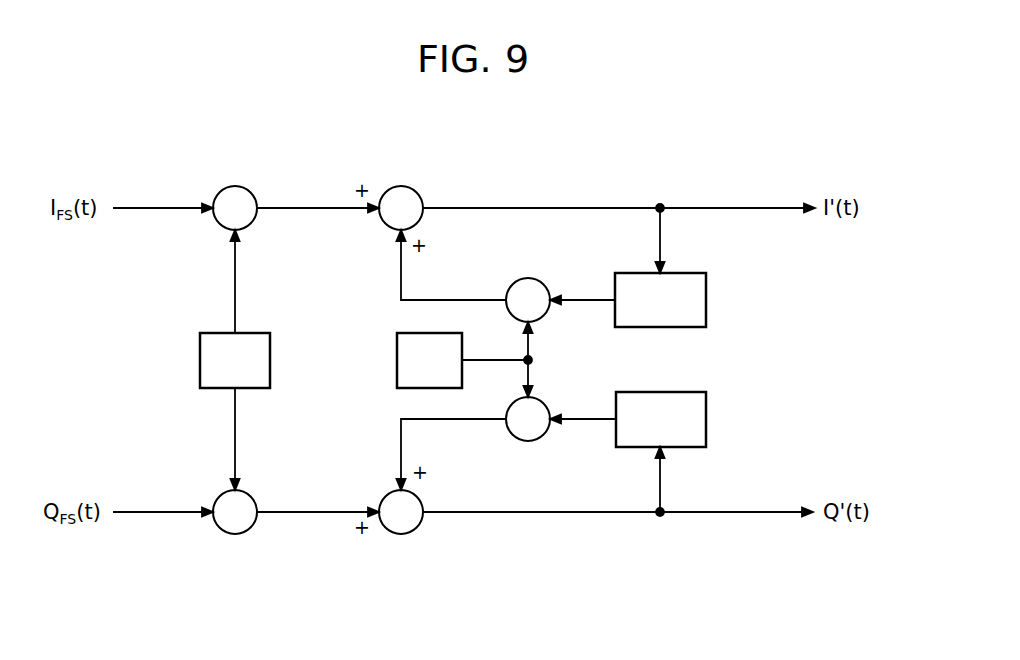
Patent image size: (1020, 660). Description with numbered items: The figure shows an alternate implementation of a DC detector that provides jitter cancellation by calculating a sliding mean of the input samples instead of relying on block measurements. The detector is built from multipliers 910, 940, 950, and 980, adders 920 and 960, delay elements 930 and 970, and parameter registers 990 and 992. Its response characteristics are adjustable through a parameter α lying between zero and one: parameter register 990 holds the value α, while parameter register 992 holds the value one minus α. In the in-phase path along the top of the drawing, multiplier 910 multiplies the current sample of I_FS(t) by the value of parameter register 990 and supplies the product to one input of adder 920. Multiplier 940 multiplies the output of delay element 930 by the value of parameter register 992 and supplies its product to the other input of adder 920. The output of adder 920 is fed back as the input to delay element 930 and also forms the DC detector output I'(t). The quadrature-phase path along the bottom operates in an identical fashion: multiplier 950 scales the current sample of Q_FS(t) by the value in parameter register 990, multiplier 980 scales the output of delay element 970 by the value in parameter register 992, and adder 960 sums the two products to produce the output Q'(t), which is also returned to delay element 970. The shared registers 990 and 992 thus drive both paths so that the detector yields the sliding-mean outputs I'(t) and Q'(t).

The multiplier 910 is at (235, 185).
The adder 920 is at (401, 185).
The delay element 930 is at (706, 300).
The multiplier 940 is at (528, 277).
The multiplier 950 is at (235, 534).
The adder 960 is at (401, 534).
The delay element 970 is at (706, 419).
The multiplier 980 is at (528, 441).
The parameter register 990 is at (200, 360).
The parameter register 992 is at (397, 360).